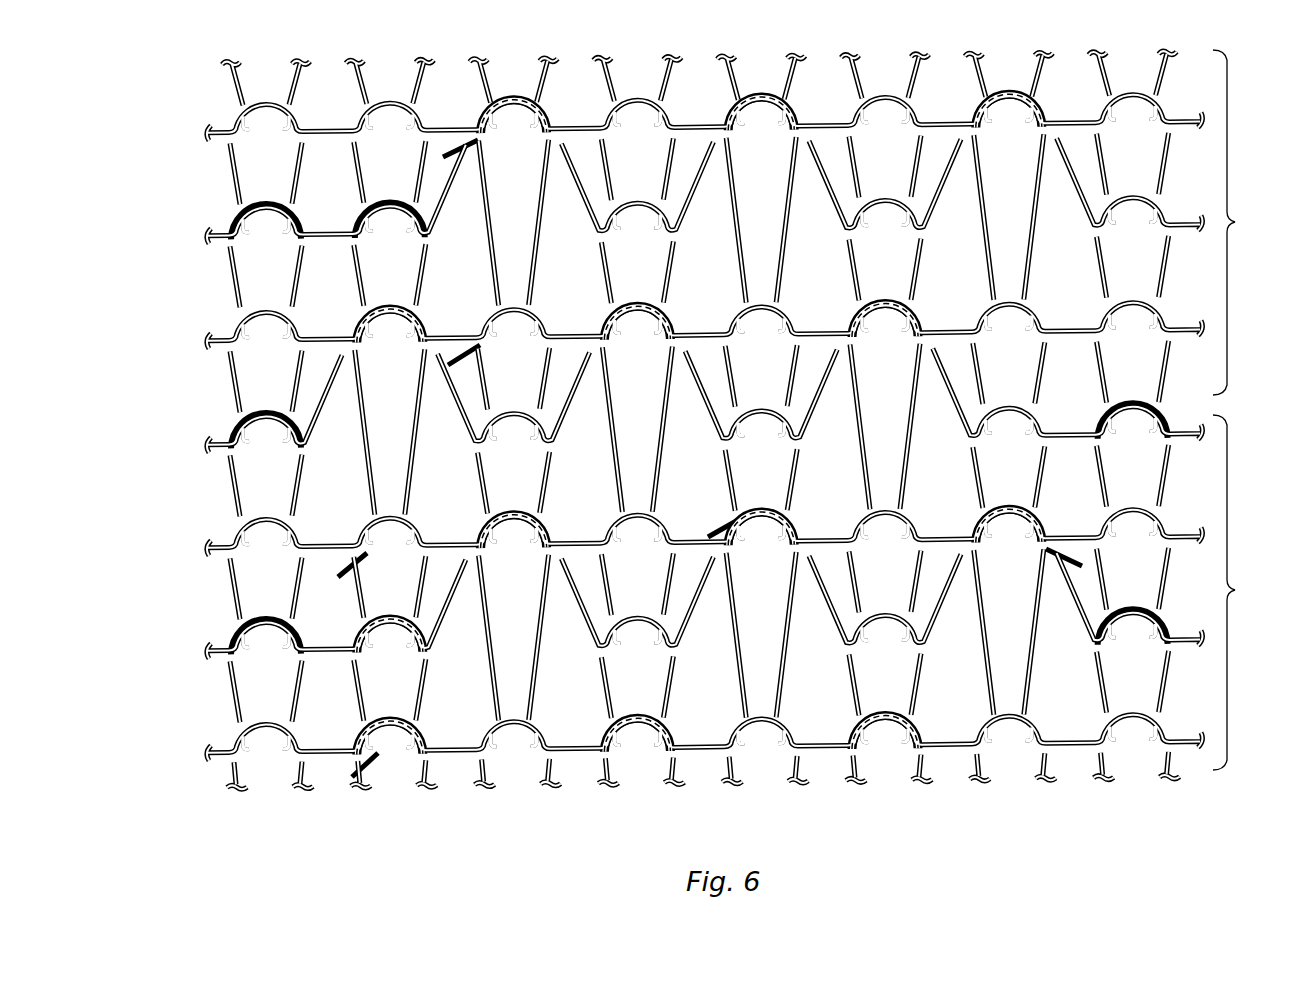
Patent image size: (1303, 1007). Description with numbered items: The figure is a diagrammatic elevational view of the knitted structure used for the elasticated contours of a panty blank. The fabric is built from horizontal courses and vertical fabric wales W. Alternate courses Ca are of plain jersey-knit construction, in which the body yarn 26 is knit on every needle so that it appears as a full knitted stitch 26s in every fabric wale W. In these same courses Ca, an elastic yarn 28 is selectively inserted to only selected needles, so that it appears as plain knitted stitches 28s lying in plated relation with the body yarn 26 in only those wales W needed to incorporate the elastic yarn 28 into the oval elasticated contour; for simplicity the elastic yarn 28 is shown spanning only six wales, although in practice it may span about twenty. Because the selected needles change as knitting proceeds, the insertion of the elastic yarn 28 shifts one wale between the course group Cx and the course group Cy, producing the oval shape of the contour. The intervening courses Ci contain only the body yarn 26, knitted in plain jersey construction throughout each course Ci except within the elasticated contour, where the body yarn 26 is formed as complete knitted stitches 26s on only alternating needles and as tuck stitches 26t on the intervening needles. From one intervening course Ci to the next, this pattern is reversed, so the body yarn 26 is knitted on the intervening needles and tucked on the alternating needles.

The body yarn 26 is at (230, 487).
The knitted stitch 26s is at (543, 396).
The tuck stitch 26t is at (432, 318).
The elastic yarn 28 is at (366, 766).
The plain knitted stitch 28s is at (620, 400).
The fabric wale W is at (268, 787).
The intervening course Ci is at (200, 406).
The alternate course Ca is at (200, 492).
The course Cx is at (1247, 592).
The course Cy is at (1247, 222).